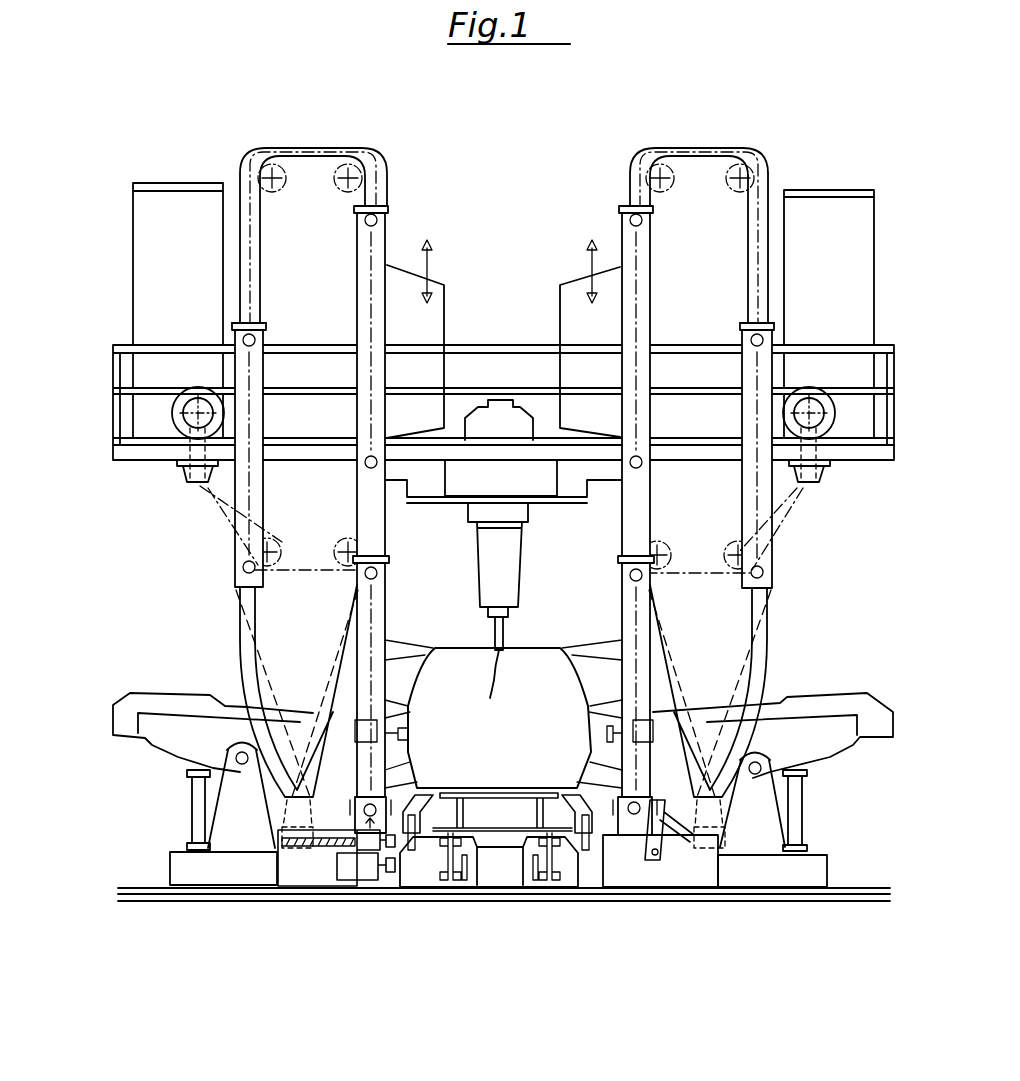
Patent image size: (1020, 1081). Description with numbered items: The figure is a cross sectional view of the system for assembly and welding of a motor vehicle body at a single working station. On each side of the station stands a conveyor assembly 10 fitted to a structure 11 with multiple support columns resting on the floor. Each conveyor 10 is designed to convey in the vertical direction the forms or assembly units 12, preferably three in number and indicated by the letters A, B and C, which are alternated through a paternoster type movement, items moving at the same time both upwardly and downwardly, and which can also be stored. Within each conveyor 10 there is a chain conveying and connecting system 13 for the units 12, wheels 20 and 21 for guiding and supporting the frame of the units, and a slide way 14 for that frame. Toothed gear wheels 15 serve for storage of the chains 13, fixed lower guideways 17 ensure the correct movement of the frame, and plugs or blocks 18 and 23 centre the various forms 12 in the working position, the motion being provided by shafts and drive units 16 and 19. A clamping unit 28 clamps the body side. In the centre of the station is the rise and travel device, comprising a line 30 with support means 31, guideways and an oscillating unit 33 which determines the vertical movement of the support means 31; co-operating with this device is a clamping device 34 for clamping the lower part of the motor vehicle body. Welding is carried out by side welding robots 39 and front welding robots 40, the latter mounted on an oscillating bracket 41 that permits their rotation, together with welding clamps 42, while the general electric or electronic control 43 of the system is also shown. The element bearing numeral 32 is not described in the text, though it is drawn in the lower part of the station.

The conveyor assembly 10 is at (808, 522).
The structure 11 is at (128, 455).
The form or assembly unit 12 is at (775, 563).
The chain conveying and connecting system 13 is at (762, 200).
The slide way 14 is at (703, 148).
The toothed gear wheel 15 is at (640, 188).
The shaft and drive unit 16 is at (827, 478).
The fixed lower guideway 17 is at (762, 668).
The plug or block 18 is at (368, 843).
The shaft and drive unit 19 is at (310, 845).
The wheel 20 is at (745, 340).
The wheel 21 is at (632, 470).
The plug or block 23 is at (665, 852).
The clamping unit of the body side 28 is at (605, 640).
The line 30 is at (512, 893).
The support means 31 is at (470, 800).
The clamp 32 is at (437, 872).
The oscillating unit 33 is at (487, 875).
The clamping device 34 is at (590, 858).
The side welding robot 39 is at (847, 752).
The front welding robot 40 is at (487, 560).
The oscillating bracket 41 is at (428, 487).
The welding clamp 42 is at (415, 735).
The general electric or electronic control 43 is at (827, 217).
The assembly unit A is at (372, 683).
The assembly unit B is at (385, 245).
The assembly unit C is at (765, 372).